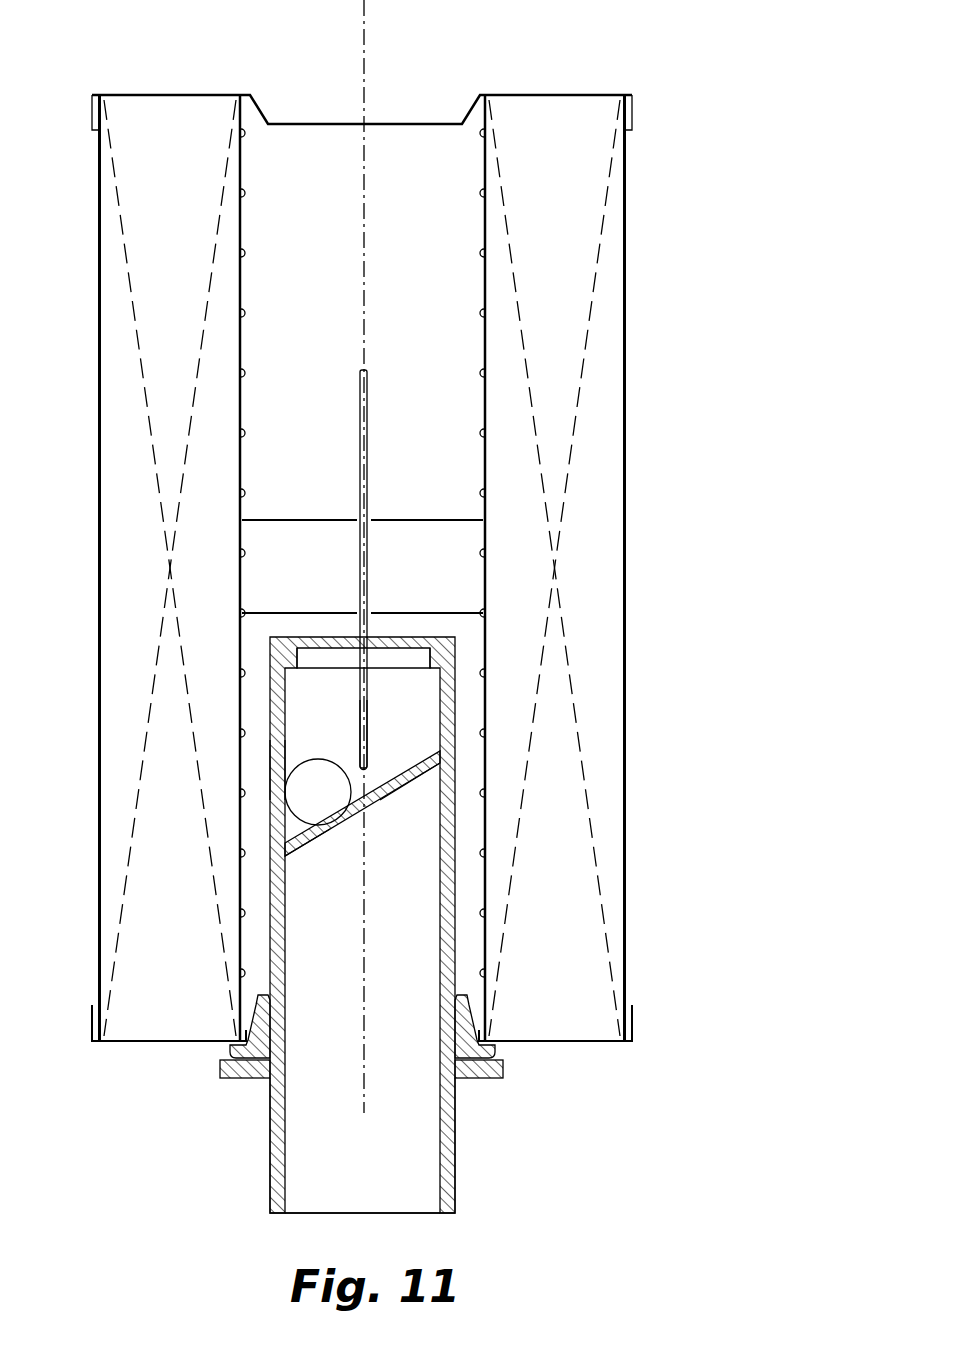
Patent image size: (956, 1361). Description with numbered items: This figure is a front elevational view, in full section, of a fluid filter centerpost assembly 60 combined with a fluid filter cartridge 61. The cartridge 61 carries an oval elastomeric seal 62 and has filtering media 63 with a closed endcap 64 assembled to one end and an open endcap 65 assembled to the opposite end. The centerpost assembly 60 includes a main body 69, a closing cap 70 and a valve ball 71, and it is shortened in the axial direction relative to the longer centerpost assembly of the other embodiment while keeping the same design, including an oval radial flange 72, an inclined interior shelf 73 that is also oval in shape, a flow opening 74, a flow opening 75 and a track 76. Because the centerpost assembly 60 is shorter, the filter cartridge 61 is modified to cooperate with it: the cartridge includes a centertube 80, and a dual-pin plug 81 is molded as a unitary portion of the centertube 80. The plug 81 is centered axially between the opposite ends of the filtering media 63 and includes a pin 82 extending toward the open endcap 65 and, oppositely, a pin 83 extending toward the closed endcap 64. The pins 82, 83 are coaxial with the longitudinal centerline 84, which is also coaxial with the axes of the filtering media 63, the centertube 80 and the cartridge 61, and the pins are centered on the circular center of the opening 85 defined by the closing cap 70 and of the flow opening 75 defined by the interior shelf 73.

The centerpost assembly 60 is at (248, 958).
The fluid filter cartridge 61 is at (637, 676).
The oval elastomeric seal 62 is at (490, 1052).
The filtering media 63 is at (555, 868).
The closed endcap 64 is at (560, 95).
The open endcap 65 is at (108, 1045).
The main body 69 is at (270, 1130).
The closing cap 70 is at (293, 637).
The valve ball 71 is at (325, 800).
The oval radial flange 72 is at (472, 1078).
The inclined interior shelf 73 is at (405, 790).
The flow opening 74 is at (270, 770).
The flow opening 75 is at (370, 790).
The track 76 is at (320, 845).
The centertube 80 is at (486, 238).
The dual-pin plug 81 is at (460, 548).
The pin 82 is at (357, 740).
The pin 83 is at (357, 432).
The longitudinal centerline 84 is at (365, 18).
The opening 85 is at (370, 645).